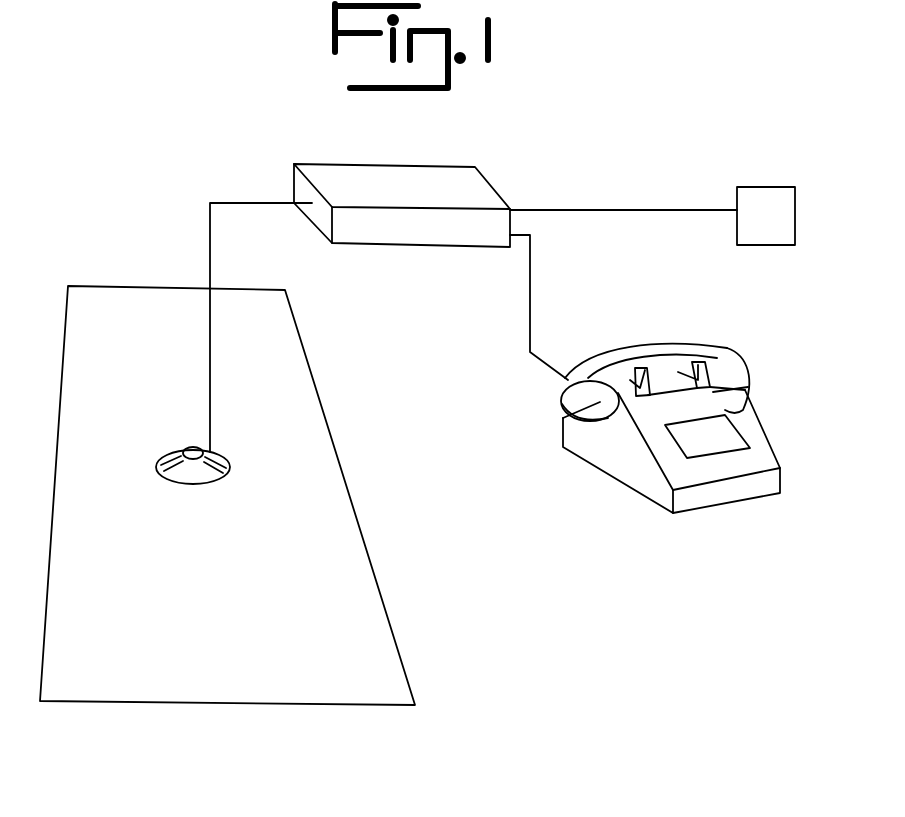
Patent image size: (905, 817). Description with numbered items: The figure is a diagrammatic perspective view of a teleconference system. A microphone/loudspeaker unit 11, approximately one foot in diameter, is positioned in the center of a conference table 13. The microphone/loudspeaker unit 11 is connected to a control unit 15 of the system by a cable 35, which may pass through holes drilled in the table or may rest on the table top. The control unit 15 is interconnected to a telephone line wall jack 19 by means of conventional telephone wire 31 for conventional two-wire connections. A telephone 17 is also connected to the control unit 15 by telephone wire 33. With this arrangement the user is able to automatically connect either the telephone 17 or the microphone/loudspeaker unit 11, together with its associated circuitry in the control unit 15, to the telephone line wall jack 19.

The microphone/loudspeaker unit 11 is at (229, 467).
The conference table 13 is at (177, 701).
The control unit 15 is at (445, 165).
The telephone 17 is at (753, 428).
The telephone line wall jack 19 is at (755, 187).
The telephone wire 31 is at (612, 210).
The telephone wire 33 is at (530, 290).
The cable 35 is at (210, 255).